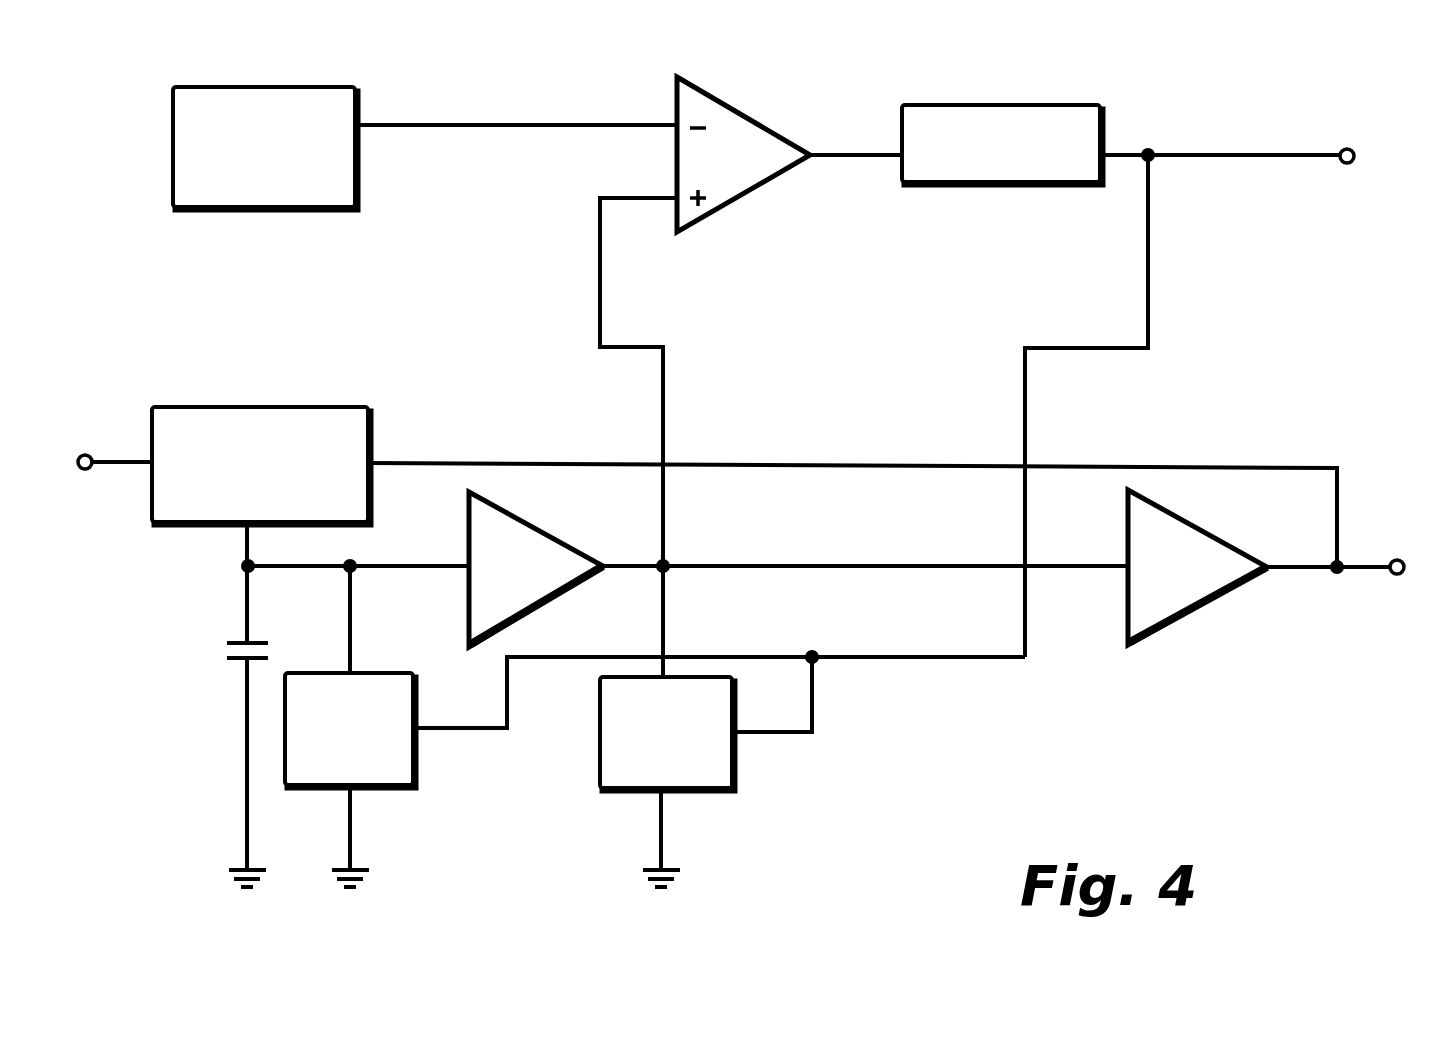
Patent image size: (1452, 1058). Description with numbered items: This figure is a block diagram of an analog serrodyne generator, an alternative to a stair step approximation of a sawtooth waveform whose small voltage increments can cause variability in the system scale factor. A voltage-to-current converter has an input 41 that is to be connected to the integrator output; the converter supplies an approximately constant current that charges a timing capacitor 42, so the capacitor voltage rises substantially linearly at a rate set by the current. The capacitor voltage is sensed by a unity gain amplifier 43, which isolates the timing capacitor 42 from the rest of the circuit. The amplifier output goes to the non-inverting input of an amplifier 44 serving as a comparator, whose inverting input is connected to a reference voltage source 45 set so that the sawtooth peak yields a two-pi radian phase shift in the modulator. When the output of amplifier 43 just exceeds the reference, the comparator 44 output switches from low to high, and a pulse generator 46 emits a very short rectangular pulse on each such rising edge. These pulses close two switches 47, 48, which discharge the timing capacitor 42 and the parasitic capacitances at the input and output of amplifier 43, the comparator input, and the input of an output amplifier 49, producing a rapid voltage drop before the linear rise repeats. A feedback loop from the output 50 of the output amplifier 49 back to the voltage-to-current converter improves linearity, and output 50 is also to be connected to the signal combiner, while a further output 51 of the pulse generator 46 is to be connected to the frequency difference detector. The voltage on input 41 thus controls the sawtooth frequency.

The input 41 is at (92, 455).
The timing capacitor 42 is at (236, 405).
The amplifier 43 is at (548, 543).
The amplifier serving as a comparator 44 is at (786, 132).
The reference voltage source 45 is at (286, 86).
The pulse generator 46 is at (993, 104).
The switch 47 is at (413, 764).
The switch 48 is at (598, 775).
The output amplifier 49 is at (1210, 546).
The output 50 is at (1392, 560).
The further output 51 is at (1340, 150).